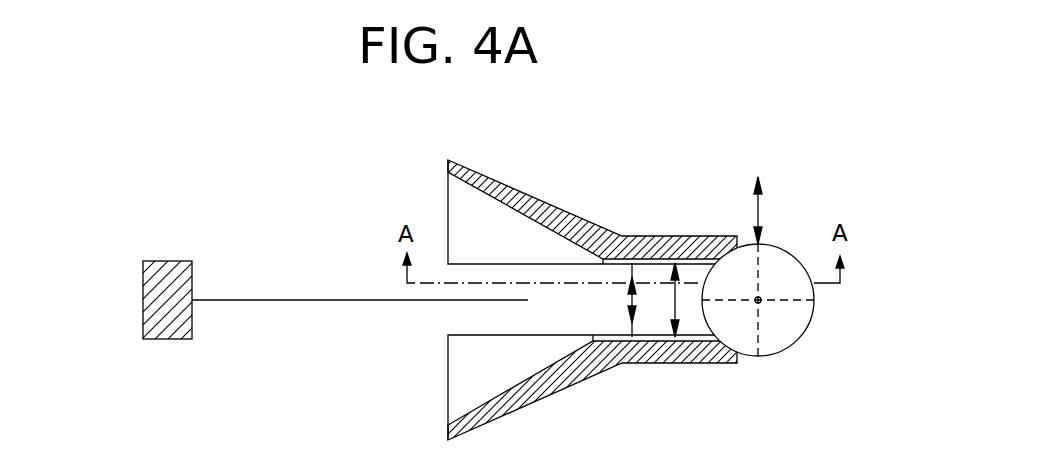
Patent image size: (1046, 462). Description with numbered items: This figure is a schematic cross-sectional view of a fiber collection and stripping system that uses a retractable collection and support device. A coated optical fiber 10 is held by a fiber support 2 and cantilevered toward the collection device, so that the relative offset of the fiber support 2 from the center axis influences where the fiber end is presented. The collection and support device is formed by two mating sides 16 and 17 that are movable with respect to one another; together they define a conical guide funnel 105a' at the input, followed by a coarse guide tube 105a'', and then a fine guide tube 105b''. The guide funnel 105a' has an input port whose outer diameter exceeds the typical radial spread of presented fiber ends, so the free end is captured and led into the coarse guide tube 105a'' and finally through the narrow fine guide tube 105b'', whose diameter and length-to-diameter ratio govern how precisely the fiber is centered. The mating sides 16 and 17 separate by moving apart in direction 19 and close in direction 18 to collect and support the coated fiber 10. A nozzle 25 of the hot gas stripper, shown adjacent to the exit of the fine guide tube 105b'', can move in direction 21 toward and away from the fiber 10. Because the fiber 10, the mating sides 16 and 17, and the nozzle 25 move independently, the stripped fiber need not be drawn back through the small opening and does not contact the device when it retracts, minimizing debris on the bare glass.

The fiber support 2 is at (180, 261).
The coated optical fiber 10 is at (290, 300).
The mating side 16 is at (522, 225).
The mating side 17 is at (553, 393).
The guide funnel 105a' is at (574, 174).
The coarse guide tube 105a'' is at (665, 219).
The fine guide tube 105b'' is at (733, 188).
The closing direction 18 is at (612, 300).
The separating direction 19 is at (658, 300).
The nozzle movement direction 21 is at (759, 208).
The nozzle 25 is at (787, 248).